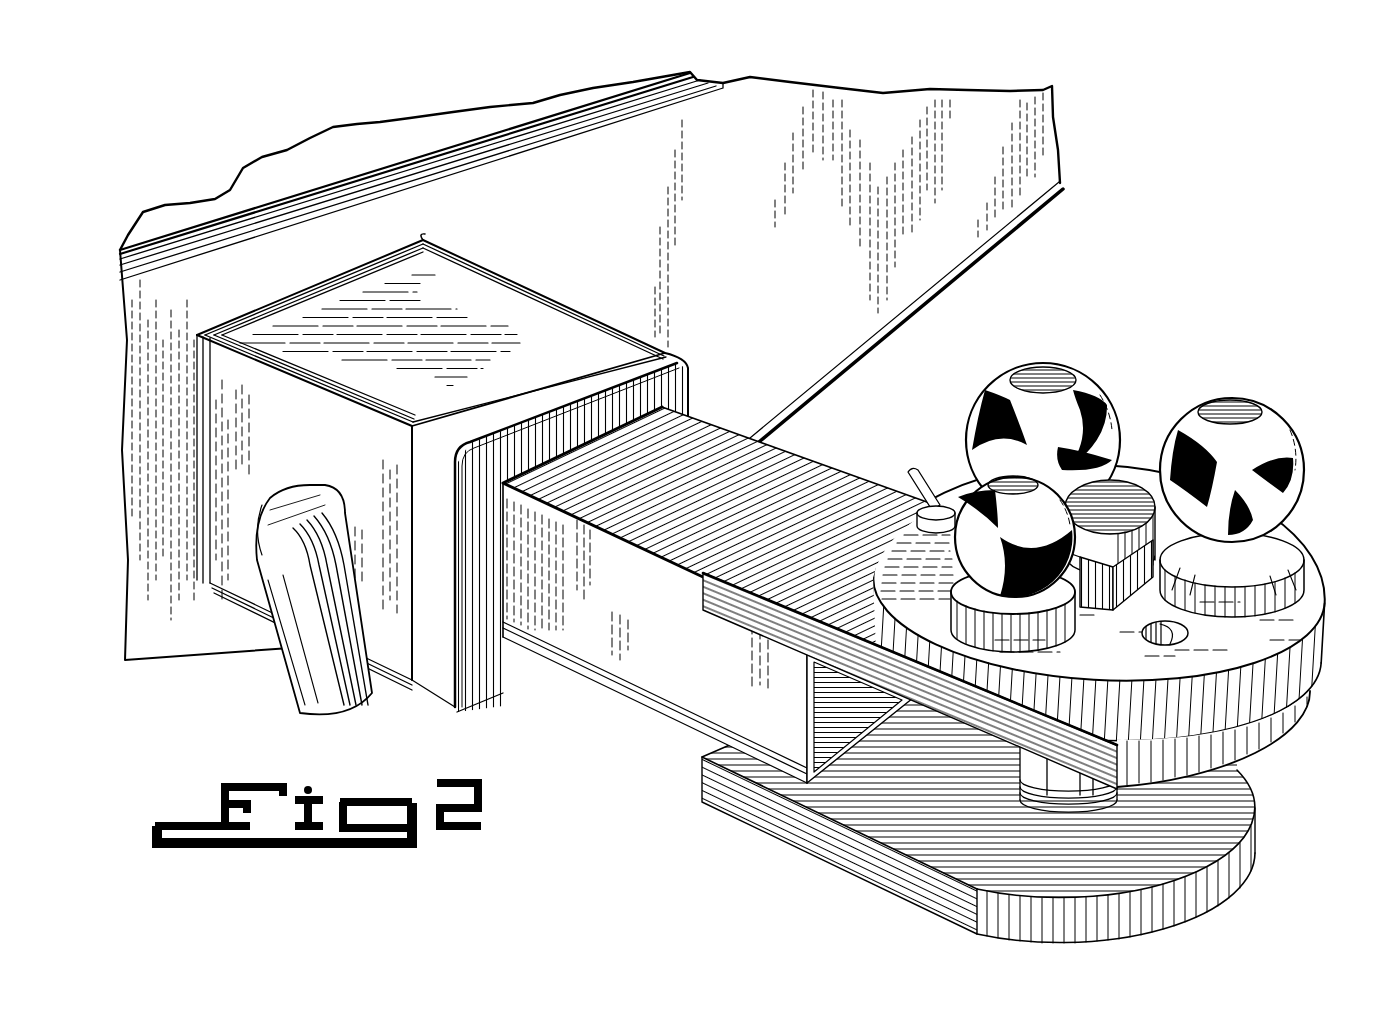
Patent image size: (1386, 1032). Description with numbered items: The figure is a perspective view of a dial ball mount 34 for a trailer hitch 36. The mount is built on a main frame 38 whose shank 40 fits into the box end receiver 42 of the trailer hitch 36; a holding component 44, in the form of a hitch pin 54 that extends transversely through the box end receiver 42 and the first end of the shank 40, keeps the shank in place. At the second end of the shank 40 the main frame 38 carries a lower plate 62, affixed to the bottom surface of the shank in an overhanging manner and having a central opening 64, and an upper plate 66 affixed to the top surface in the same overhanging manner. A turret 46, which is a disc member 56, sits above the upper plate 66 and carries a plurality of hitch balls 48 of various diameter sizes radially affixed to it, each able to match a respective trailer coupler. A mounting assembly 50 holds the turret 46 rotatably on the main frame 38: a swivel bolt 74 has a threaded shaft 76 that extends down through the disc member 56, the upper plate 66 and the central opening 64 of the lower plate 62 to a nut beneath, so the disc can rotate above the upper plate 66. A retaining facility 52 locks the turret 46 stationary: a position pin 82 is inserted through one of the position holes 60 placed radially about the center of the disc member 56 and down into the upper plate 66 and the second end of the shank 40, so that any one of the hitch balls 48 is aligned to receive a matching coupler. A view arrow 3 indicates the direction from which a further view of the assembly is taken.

The view direction arrow for FIG. 3 is at (647, 756).
The dial ball mount 34 is at (1115, 496).
The trailer hitch 36 is at (1001, 250).
The main frame 38 is at (811, 457).
The shank 40 is at (593, 662).
The box end receiver 42 is at (523, 307).
The holding component 44 is at (306, 614).
The turret 46 is at (959, 471).
The hitch balls 48 is at (1032, 385).
The mounting assembly 50 is at (1135, 467).
The retaining facility 52 is at (910, 474).
The hitch pin 54 is at (310, 667).
The disc member 56 is at (1326, 610).
The position holes 60 is at (1189, 635).
The lower plate 62 is at (895, 882).
The central opening 64 is at (1062, 794).
The upper plate 66 is at (1259, 740).
The swivel bolt 74 is at (1100, 593).
The threaded shaft 76 is at (1095, 805).
The position pin 82 is at (932, 505).